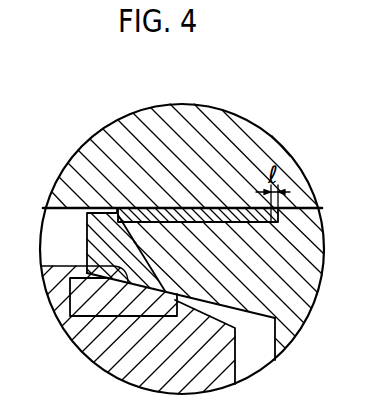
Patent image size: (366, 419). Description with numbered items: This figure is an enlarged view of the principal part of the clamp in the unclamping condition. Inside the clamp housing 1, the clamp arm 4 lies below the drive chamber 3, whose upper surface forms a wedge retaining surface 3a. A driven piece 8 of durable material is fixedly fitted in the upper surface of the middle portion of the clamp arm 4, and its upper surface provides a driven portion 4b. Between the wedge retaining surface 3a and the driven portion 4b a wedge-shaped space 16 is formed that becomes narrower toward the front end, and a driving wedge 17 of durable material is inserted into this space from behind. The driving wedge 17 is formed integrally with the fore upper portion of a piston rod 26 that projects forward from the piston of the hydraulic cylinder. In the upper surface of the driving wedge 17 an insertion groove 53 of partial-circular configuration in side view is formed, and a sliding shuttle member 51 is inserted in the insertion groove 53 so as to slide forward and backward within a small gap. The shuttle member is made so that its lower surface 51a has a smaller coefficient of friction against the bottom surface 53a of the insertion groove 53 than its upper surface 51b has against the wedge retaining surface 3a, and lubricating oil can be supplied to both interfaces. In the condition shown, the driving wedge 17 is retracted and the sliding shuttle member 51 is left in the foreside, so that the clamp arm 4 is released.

The clamp housing 1 is at (97, 127).
The driving wedge 17 is at (87, 228).
The sliding shuttle member 51 is at (168, 204).
The upper surface of the sliding shuttle member 51b is at (242, 206).
The lower surface of the sliding shuttle member 51a is at (273, 248).
The wedge retaining surface 3a is at (212, 215).
The drive chamber 3 is at (229, 286).
The wedge-shaped space 16 is at (62, 240).
The driven portion 4b is at (83, 266).
The clamp arm 4 is at (101, 346).
The driven piece 8 is at (70, 300).
The piston rod 26 is at (293, 332).
The bottom surface of the insertion groove 53a is at (157, 224).
The insertion groove 53 is at (220, 224).